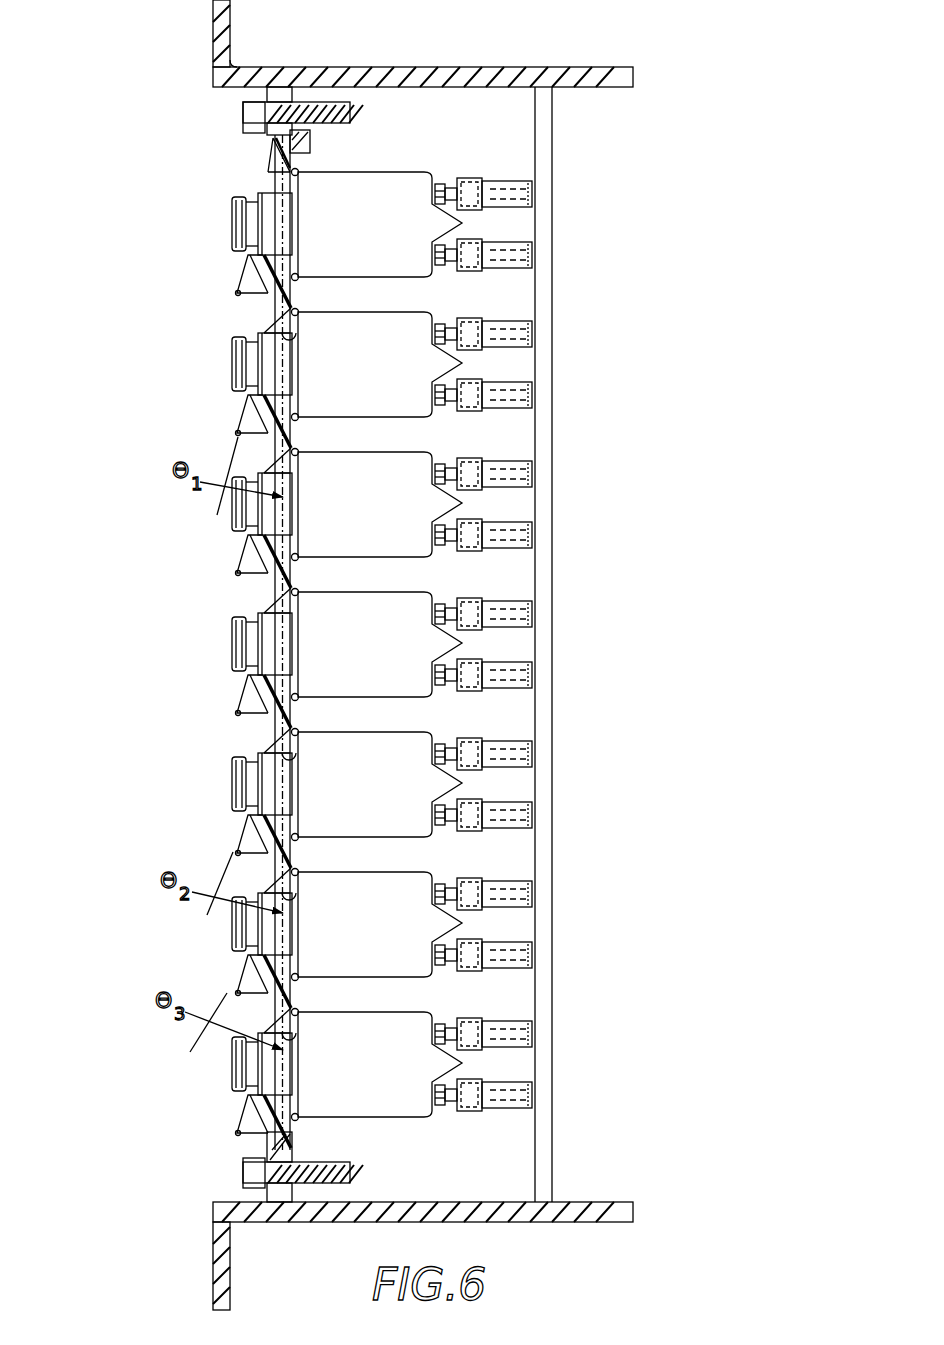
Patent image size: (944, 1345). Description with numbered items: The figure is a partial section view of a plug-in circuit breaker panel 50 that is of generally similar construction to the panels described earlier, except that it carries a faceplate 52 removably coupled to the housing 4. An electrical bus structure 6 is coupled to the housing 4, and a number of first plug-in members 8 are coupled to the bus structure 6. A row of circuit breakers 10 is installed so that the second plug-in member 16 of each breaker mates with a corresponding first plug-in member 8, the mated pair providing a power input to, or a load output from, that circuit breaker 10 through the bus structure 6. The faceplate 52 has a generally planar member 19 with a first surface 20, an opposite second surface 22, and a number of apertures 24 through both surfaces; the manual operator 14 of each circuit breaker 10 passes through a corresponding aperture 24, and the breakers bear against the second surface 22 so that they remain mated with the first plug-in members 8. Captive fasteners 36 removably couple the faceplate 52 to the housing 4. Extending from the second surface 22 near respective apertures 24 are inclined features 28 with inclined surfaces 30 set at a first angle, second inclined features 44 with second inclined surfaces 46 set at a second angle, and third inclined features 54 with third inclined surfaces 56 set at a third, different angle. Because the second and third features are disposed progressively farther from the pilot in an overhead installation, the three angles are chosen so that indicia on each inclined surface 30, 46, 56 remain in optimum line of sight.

The housing 4 is at (372, 70).
The electrical bus structure 6 is at (553, 385).
The first plug-in members 8 is at (520, 210).
The circuit breakers 10 is at (387, 200).
The manual operator 14 is at (232, 365).
The second plug-in member 16 is at (520, 180).
The generally planar member 19 is at (268, 293).
The first surface 20 is at (303, 163).
The opposite second surface 22 is at (268, 152).
The apertures 24 is at (282, 333).
The inclined features 28 is at (260, 418).
The inclined surface 30 is at (215, 420).
The captive fasteners 36 is at (250, 103).
The second inclined features 44 is at (242, 838).
The second inclined surfaces 46 is at (217, 840).
The panel 50 is at (140, 86).
The faceplate 52 is at (262, 170).
The third inclined features 54 is at (248, 968).
The third inclined surface 56 is at (214, 976).